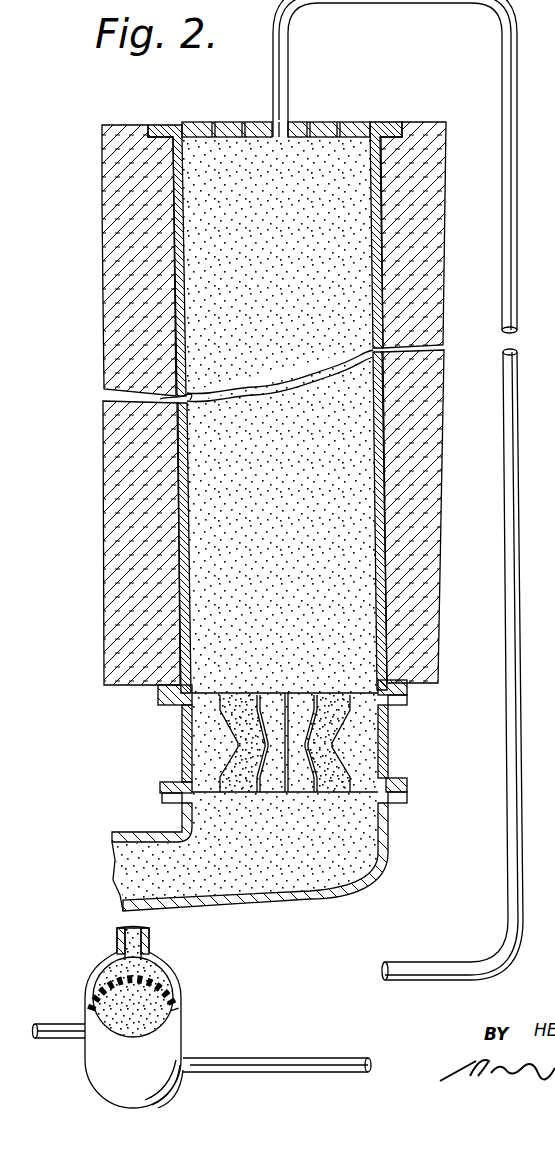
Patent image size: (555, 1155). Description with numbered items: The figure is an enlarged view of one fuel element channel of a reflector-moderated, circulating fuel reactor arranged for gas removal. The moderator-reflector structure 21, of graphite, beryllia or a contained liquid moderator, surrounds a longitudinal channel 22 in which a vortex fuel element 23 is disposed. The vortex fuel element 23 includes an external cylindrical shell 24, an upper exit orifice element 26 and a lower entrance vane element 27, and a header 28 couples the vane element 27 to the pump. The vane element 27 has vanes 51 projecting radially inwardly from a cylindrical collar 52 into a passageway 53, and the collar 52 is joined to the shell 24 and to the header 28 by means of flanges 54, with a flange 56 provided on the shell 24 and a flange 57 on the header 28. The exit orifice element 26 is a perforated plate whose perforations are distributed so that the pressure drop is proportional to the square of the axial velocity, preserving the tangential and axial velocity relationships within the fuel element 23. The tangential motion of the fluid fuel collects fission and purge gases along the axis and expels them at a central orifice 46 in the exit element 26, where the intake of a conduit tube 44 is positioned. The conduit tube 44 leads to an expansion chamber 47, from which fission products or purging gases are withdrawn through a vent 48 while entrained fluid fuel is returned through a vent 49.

The moderator-reflector structure 21 is at (122, 430).
The longitudinal channel 22 is at (192, 398).
The vortex fuel element 23 is at (279, 415).
The external cylindrical shell 24 is at (381, 627).
The upper exit orifice element 26 is at (300, 122).
The lower entrance vane element 27 is at (178, 739).
The header 28 is at (389, 826).
The conduit tube 44 is at (521, 396).
The central orifice 46 is at (280, 137).
The expansion chamber 47 is at (182, 1003).
The vent 48 is at (57, 1024).
The vent 49 is at (149, 946).
The vanes 51 is at (290, 776).
The cylindrical collar 52 is at (389, 732).
The passageway 53 is at (208, 750).
The flanges 54 is at (408, 702).
The flange 56 is at (409, 686).
The flange 57 is at (408, 797).